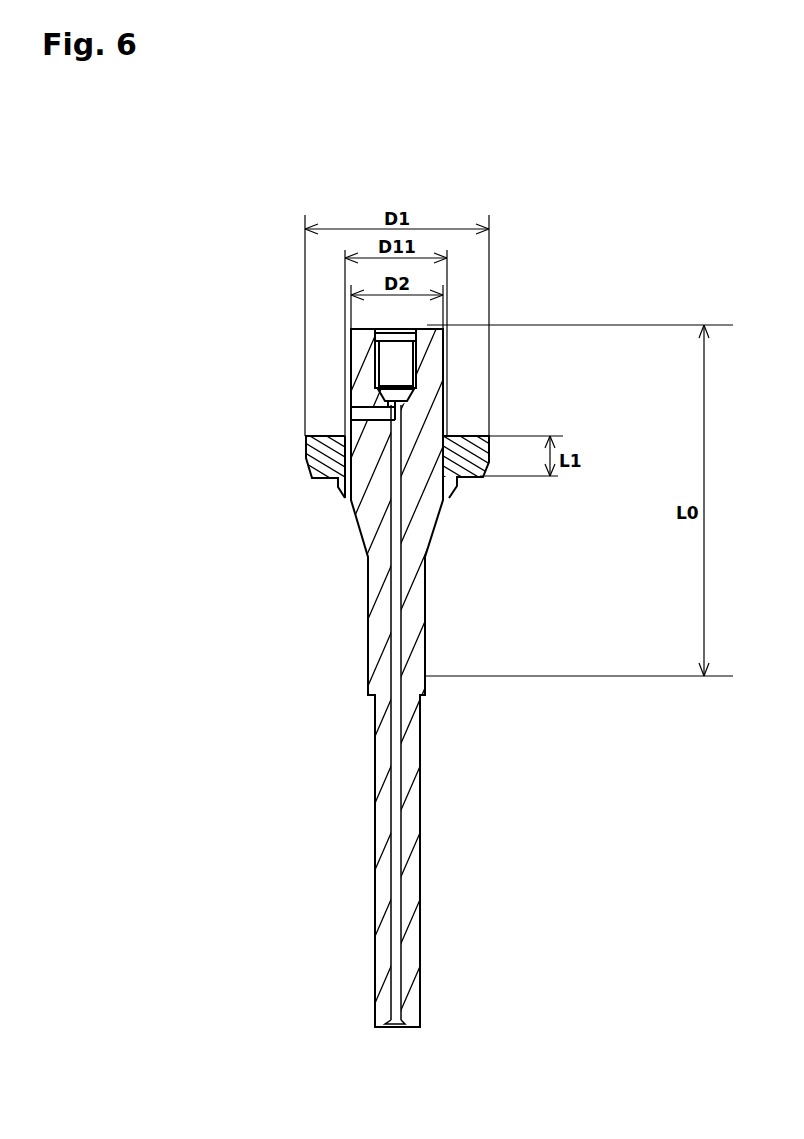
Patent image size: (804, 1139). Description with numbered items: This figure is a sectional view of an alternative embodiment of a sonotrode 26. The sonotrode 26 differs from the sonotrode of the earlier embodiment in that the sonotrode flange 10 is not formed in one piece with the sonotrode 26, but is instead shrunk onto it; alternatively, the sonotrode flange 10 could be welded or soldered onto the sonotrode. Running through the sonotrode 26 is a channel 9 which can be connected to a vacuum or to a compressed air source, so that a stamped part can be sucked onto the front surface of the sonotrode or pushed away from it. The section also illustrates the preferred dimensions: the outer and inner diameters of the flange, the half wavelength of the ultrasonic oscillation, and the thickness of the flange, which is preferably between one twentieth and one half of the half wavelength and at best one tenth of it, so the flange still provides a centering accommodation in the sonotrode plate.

The channel 9 is at (397, 955).
The sonotrode flange 10 is at (317, 467).
The sonotrode 26 is at (385, 680).